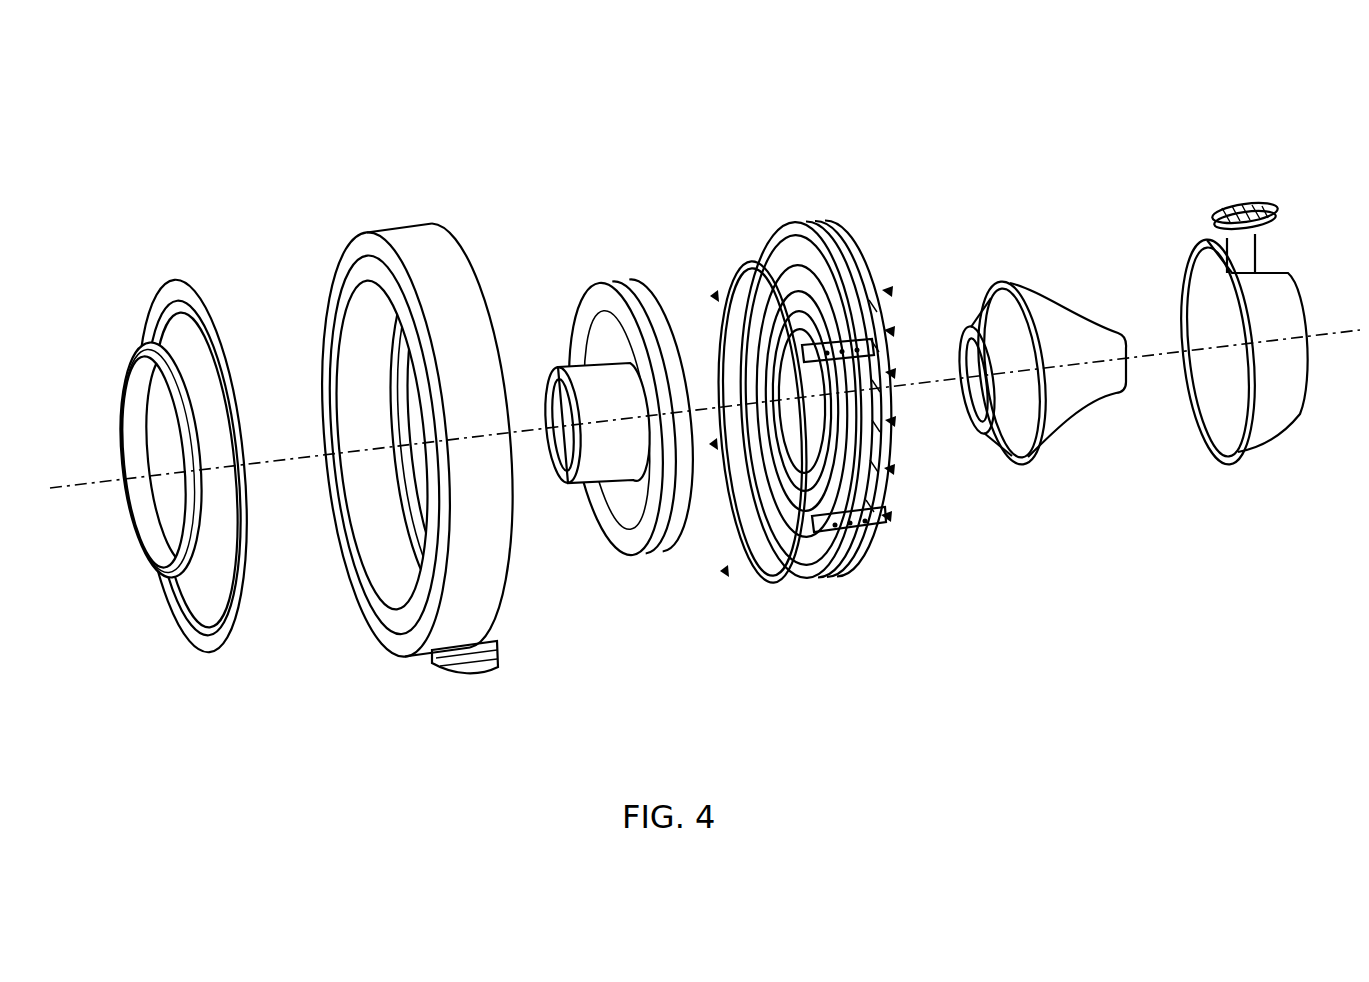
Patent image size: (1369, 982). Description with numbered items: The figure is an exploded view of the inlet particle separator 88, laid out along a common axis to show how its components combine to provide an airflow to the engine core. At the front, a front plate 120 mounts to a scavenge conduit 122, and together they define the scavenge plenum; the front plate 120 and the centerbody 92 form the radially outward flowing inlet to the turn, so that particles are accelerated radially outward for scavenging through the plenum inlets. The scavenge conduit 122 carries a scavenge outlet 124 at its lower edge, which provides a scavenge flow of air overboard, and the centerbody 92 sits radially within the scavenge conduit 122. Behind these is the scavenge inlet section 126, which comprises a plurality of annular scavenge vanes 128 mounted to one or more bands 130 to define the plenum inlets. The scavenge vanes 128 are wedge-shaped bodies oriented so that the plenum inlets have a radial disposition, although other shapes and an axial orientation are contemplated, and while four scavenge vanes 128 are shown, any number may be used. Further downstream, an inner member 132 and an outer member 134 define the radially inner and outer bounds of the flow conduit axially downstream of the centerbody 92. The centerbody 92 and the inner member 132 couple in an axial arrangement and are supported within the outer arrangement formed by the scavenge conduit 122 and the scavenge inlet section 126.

The inlet particle separator 88 is at (243, 156).
The centerbody 92 is at (603, 283).
The front plate 120 is at (146, 343).
The scavenge conduit 122 is at (415, 240).
The scavenge outlet 124 is at (498, 643).
The scavenge inlet section 126 is at (853, 220).
The scavenge vanes 128 is at (727, 278).
The bands 130 is at (793, 222).
The inner member 132 is at (1058, 347).
The outer member 134 is at (1277, 296).